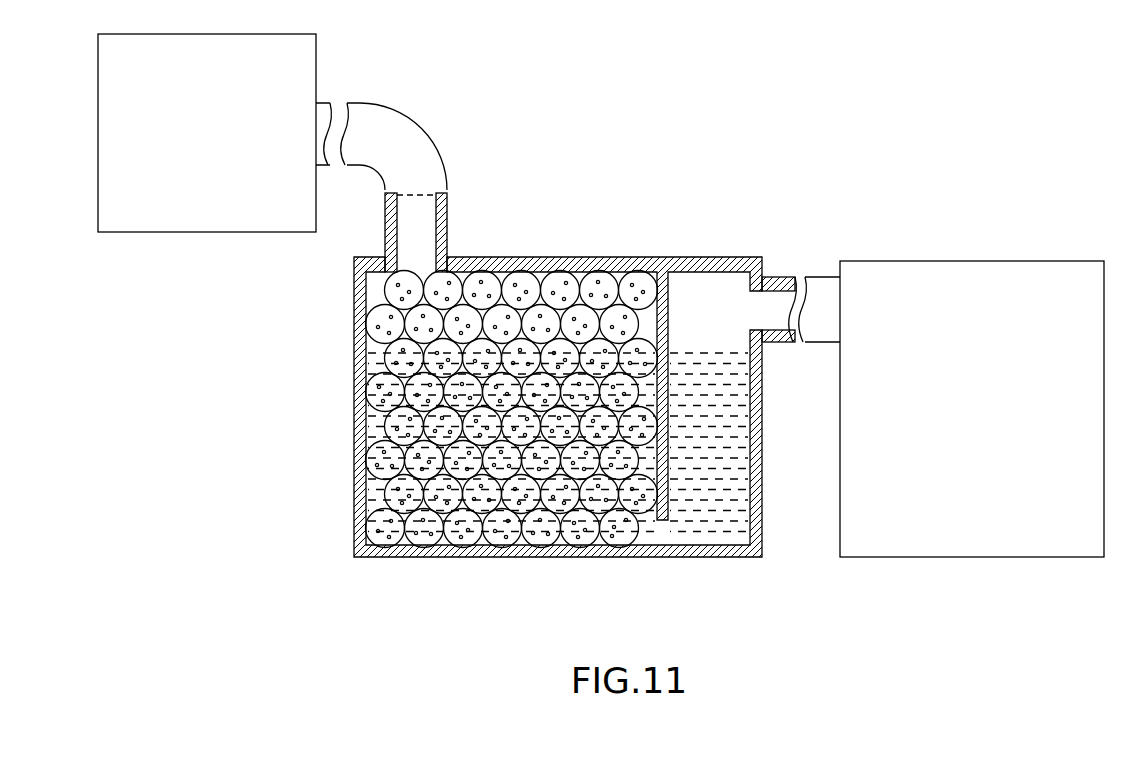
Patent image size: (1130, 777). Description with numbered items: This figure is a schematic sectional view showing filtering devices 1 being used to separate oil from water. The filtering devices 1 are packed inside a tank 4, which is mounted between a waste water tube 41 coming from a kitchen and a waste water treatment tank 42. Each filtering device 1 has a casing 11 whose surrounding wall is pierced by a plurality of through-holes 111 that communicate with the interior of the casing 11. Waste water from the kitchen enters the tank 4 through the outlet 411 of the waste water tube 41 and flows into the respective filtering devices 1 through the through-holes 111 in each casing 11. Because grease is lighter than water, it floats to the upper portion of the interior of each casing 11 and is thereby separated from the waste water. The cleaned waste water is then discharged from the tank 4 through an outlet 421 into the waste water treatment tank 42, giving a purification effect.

The filtering device 1 is at (642, 282).
The casing 11 is at (615, 578).
The through-hole 111 is at (613, 530).
The tank 4 is at (597, 268).
The waste water tube 41 is at (431, 152).
The outlet 411 is at (428, 255).
The waste water treatment tank 42 is at (874, 261).
The outlet 421 is at (776, 280).